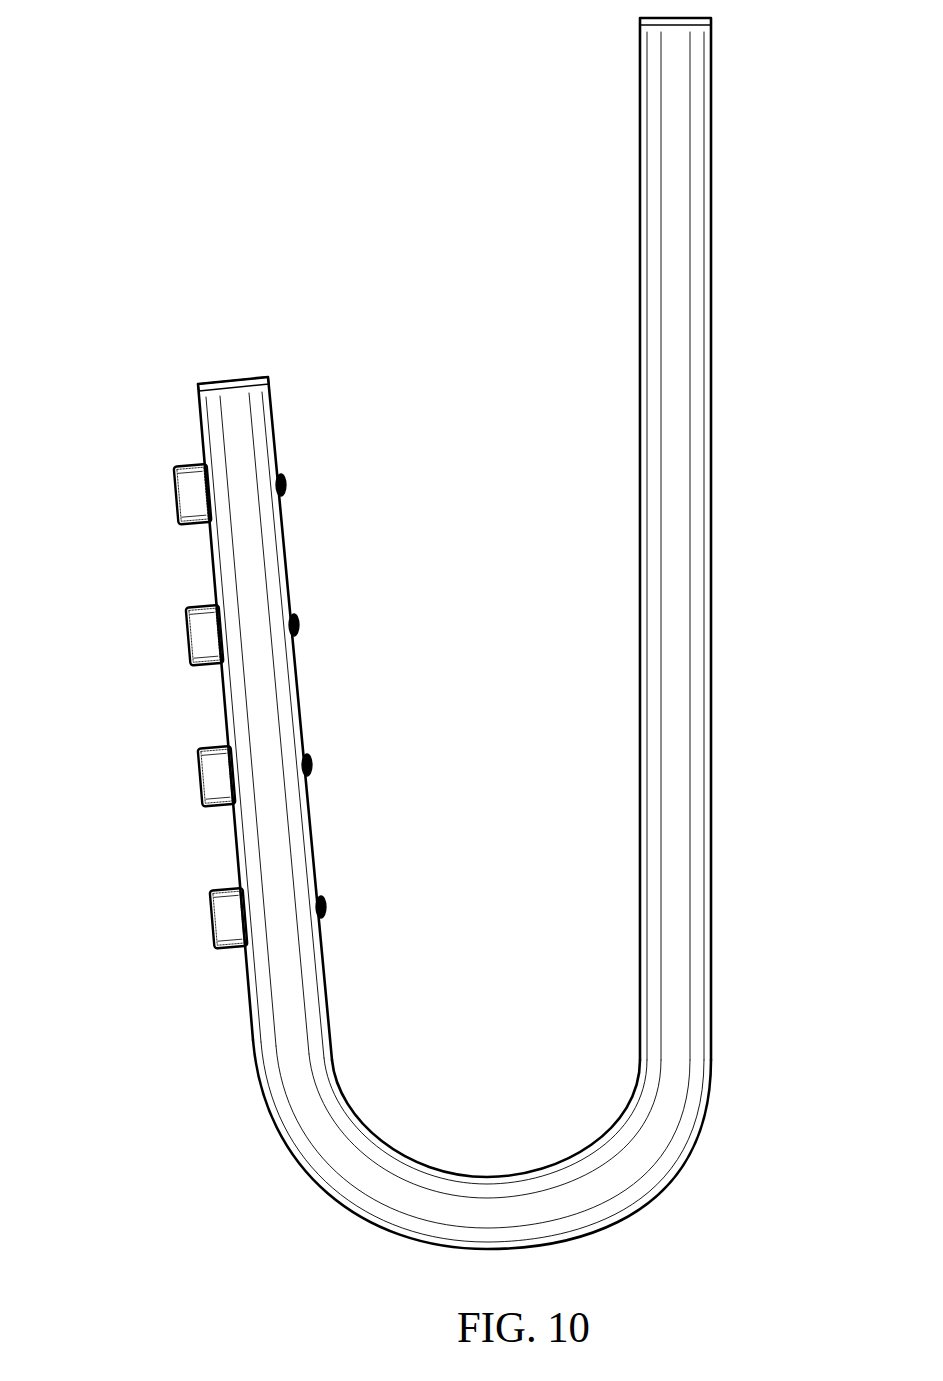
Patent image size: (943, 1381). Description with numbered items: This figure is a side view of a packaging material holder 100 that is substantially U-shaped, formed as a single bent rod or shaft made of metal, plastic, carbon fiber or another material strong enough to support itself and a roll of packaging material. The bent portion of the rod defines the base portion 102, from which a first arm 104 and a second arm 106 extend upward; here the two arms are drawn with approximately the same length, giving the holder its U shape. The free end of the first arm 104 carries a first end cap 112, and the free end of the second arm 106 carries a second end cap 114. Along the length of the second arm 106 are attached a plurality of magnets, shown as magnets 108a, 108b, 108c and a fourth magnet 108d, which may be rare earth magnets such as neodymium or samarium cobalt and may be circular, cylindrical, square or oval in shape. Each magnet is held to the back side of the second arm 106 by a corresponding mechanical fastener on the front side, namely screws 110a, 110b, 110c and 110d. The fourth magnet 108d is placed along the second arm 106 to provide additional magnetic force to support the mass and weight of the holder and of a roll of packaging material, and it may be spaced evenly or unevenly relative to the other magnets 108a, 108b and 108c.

The packaging material holder 100 is at (170, 111).
The base portion 102 is at (290, 1157).
The first arm 104 is at (712, 272).
The second arm 106 is at (252, 1010).
The magnet 108a is at (177, 470).
The magnet 108b is at (188, 612).
The magnet 108c is at (202, 772).
The fourth magnet 108d is at (213, 915).
The screw 110a is at (287, 484).
The screw 110b is at (298, 622).
The screw 110c is at (311, 762).
The screw 110d is at (321, 905).
The first end cap 112 is at (712, 22).
The second end cap 114 is at (198, 392).